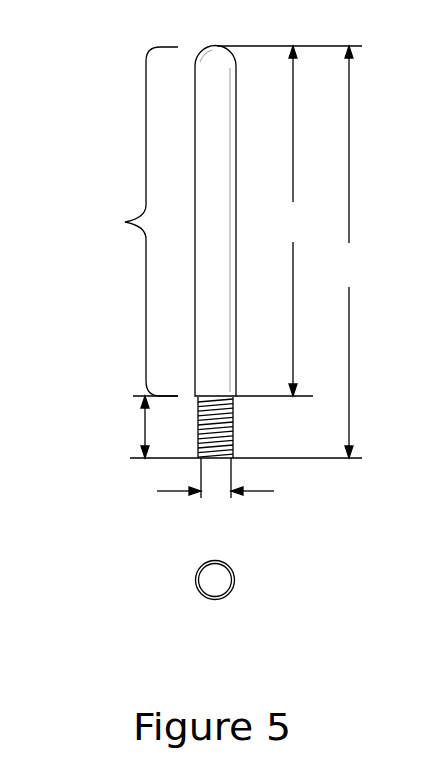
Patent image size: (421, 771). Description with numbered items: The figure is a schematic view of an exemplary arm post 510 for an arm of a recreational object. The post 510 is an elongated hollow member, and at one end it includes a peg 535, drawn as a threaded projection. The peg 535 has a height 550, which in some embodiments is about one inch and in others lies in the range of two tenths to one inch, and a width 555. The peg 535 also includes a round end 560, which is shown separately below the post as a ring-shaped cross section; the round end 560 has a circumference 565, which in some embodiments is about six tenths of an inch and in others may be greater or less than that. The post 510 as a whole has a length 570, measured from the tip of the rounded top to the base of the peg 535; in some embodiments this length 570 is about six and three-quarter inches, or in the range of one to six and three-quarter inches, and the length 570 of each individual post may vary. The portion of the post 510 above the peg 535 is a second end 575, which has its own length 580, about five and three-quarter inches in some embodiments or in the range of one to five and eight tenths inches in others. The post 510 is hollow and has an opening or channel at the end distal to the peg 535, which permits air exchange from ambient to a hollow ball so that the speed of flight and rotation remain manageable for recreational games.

The arm post 510 is at (122, 42).
The peg 535 is at (234, 417).
The height of peg 550 is at (145, 427).
The width of peg 555 is at (214, 489).
The round end 560 is at (202, 567).
The circumference of round end 565 is at (228, 595).
The length of post 570 is at (351, 252).
The second end of post 575 is at (124, 221).
The length of second end 580 is at (298, 221).